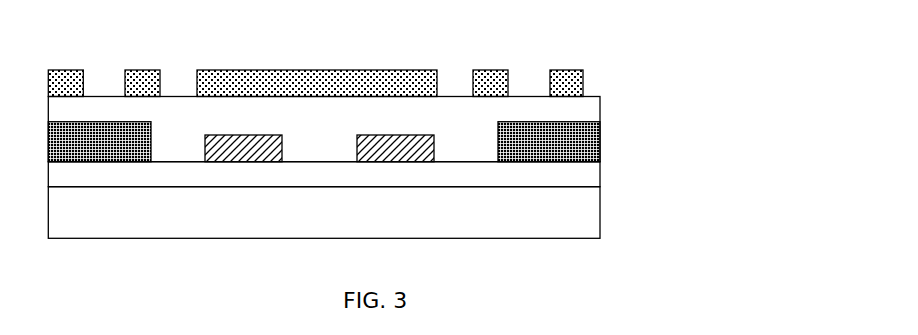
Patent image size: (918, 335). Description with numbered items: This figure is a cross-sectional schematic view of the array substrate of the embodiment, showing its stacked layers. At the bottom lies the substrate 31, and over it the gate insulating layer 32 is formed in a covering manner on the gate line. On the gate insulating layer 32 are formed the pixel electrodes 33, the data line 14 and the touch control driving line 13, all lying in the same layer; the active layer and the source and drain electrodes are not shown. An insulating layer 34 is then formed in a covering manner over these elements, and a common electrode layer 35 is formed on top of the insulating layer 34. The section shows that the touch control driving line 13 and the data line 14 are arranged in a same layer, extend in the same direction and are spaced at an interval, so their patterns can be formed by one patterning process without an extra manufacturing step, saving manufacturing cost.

The touch control driving line 13 is at (255, 143).
The data line 14 is at (405, 143).
The substrate 31 is at (600, 213).
The gate insulating layer 32 is at (600, 172).
The pixel electrodes 33 is at (600, 133).
The insulating layer 34 is at (600, 98).
The common electrode layer 35 is at (583, 72).